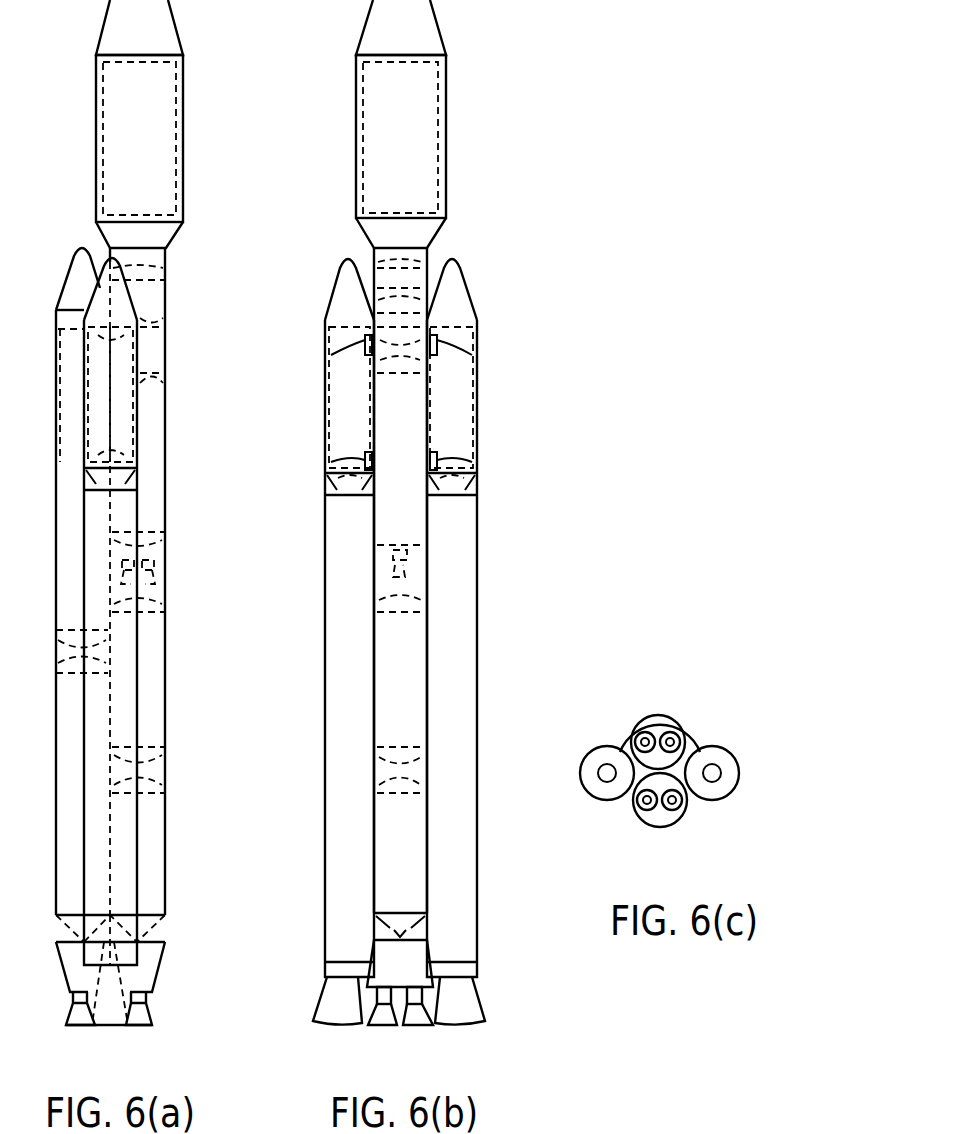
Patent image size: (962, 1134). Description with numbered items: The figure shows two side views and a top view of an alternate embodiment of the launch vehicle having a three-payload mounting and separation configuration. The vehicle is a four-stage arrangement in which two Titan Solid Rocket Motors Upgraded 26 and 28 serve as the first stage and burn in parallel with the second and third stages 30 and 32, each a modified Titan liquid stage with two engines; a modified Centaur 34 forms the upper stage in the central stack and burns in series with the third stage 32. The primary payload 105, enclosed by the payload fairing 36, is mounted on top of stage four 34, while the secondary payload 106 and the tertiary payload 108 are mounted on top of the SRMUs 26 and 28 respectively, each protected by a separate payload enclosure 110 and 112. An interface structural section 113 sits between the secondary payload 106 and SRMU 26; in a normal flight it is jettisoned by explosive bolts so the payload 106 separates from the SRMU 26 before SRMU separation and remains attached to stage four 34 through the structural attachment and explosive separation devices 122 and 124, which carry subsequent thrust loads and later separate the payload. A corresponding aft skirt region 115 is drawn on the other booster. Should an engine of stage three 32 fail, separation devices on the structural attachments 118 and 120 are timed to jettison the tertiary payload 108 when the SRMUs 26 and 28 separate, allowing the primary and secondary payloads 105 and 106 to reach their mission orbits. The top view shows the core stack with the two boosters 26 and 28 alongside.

In FIG. 6B, the Titan Solid Rocket Motor Upgraded 26 is at (477, 652).
In FIG. 6C, the Titan Solid Rocket Motor Upgraded 26 is at (740, 773).
In FIG. 6B, the Titan Solid Rocket Motor Upgraded 28 is at (325, 683).
In FIG. 6C, the Titan Solid Rocket Motor Upgraded 28 is at (582, 773).
In FIG. 6A, the second stage 30 is at (62, 595).
In FIG. 6C, the second stage 30 is at (684, 822).
In FIG. 6A, the third stage 32 is at (166, 682).
In FIG. 6A, the modified Centaur 34 is at (166, 312).
In FIG. 6B, the modified Centaur 34 is at (436, 258).
In FIG. 6C, the modified Centaur 34 is at (668, 722).
In FIG. 6A, the payload fairing 36 is at (96, 145).
In FIG. 6B, the payload fairing 36 is at (356, 143).
In FIG. 6A, the primary payload 105 is at (183, 135).
In FIG. 6B, the primary payload 105 is at (440, 152).
In FIG. 6B, the secondary payload 106 is at (473, 400).
In FIG. 6B, the tertiary payload 108 is at (329, 400).
In FIG. 6B, the payload enclosure 110 is at (477, 293).
In FIG. 6B, the payload enclosure 112 is at (332, 292).
In FIG. 6B, the interface structural section 113 is at (477, 478).
In FIG. 6B, the left booster aft skirt 115 is at (325, 480).
In FIG. 6B, the structural attachment 118 is at (365, 345).
In FIG. 6C, the structural attachment 118 is at (619, 742).
In FIG. 6B, the structural attachment 120 is at (365, 461).
In FIG. 6C, the structural attachment 120 is at (670, 742).
In FIG. 6B, the structural attachment and explosive separation device 122 is at (437, 345).
In FIG. 6C, the structural attachment and explosive separation device 122 is at (700, 727).
In FIG. 6B, the structural attachment and explosive separation device 124 is at (437, 455).
In FIG. 6C, the structural attachment and explosive separation device 124 is at (672, 800).